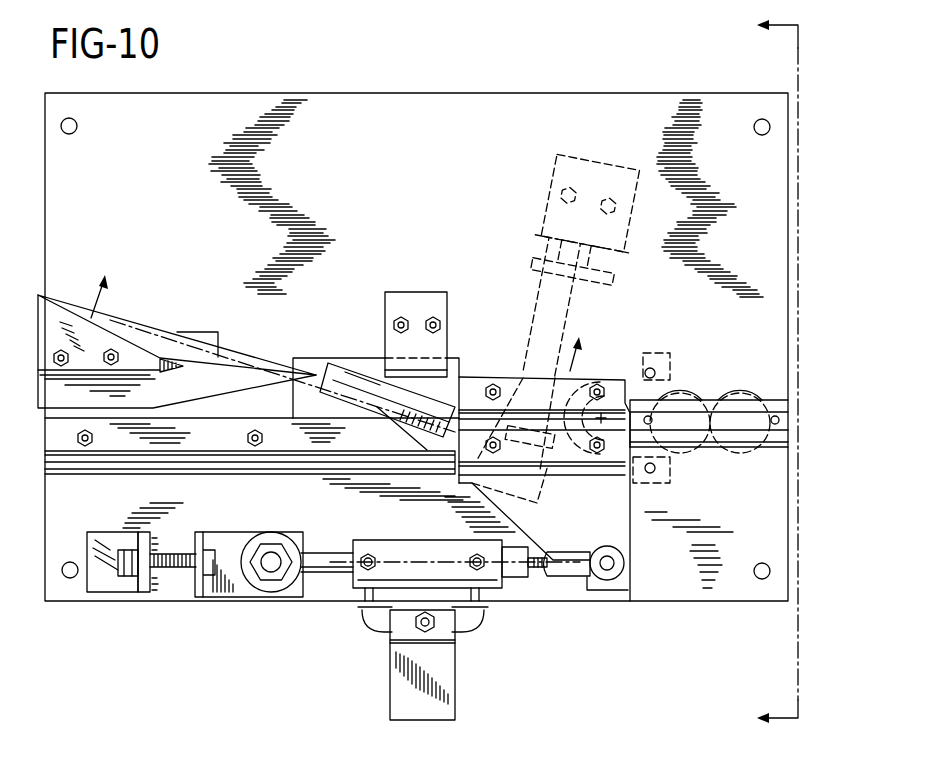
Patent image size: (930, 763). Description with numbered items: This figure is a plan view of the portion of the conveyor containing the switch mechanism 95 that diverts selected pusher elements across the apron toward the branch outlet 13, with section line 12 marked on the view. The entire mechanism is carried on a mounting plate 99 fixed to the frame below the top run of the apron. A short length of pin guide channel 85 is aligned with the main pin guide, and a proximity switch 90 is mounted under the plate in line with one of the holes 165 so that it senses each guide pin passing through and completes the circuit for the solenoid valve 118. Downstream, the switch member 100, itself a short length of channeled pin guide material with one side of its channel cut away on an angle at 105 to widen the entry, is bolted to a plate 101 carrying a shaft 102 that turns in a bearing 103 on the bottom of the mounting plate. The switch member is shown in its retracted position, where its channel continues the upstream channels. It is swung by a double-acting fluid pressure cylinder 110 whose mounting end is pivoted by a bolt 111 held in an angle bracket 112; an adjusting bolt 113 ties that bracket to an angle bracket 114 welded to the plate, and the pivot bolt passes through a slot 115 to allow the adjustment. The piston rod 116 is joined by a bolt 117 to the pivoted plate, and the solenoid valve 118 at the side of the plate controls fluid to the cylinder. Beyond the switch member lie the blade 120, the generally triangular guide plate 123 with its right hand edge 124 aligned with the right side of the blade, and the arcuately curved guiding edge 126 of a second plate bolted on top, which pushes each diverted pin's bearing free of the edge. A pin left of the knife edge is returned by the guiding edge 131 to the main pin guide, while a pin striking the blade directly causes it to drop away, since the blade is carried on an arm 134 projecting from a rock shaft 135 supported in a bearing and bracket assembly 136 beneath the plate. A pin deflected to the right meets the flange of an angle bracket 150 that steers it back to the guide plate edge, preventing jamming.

The section line 12- 12 is at (338, 316).
The branch outlet 13 is at (763, 372).
The pin guide channel 85 is at (708, 403).
The proximity switch 90 is at (743, 420).
The switch mechanism 95 is at (433, 268).
The mounting plate 99 is at (401, 171).
The switch member 100 is at (477, 385).
The plate 101 is at (617, 523).
The shaft 102 is at (540, 462).
The bearing 103 is at (607, 477).
The angled cut-away 105 is at (627, 372).
The double-acting fluid pressure cylinder 110 is at (402, 553).
The bolt 111 is at (270, 582).
The angle bracket 112 is at (237, 582).
The adjusting bolt 113 is at (178, 568).
The angle bracket 114 is at (108, 580).
The slot 115 is at (320, 577).
The piston rod 116 is at (538, 575).
The bolt 117 is at (607, 567).
The solenoid valve 118 is at (447, 712).
The blade 120 is at (383, 400).
The guide plate 123 is at (187, 347).
The right hand edge 124 is at (240, 350).
The arcuately curved guiding edge 126 is at (113, 337).
The guiding edge 131 is at (217, 398).
The arm 134 is at (380, 393).
The rock shaft 135 is at (530, 288).
The bearing and bracket assembly 136 is at (540, 250).
The angle bracket 150 is at (423, 363).
The holes 165 is at (733, 452).